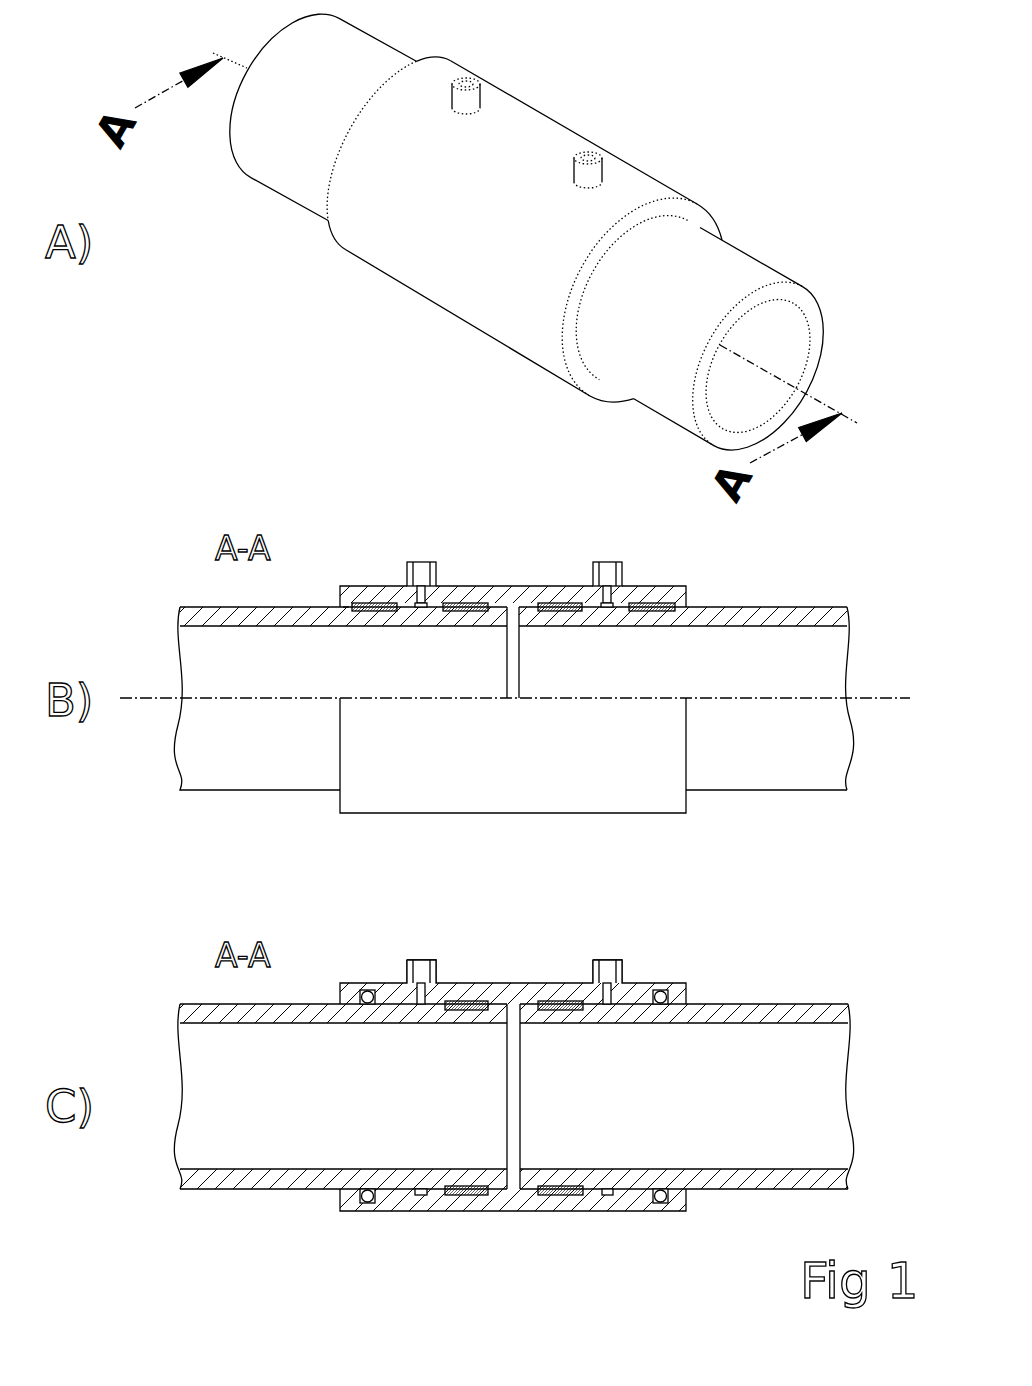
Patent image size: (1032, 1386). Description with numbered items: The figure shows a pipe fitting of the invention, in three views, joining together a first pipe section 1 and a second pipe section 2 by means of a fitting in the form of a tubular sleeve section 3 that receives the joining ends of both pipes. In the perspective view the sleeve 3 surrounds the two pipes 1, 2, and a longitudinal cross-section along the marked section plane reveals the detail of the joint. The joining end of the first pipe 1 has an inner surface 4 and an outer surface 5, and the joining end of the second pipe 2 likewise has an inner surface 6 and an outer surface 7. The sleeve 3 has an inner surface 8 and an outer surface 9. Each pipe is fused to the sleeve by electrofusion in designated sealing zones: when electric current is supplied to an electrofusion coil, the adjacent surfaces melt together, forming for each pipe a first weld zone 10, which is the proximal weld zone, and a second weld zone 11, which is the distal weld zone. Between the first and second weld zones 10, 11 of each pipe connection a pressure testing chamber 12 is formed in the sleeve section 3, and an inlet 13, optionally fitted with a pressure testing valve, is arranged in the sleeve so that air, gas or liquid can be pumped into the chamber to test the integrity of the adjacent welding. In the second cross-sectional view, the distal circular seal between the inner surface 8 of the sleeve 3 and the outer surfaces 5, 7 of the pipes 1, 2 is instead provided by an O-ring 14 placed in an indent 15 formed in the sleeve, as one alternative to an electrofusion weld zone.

The first pipe section 1 is at (341, 44).
The second pipe section 2 is at (722, 242).
The fitting sleeve 3 is at (517, 117).
The inner surface of first pipe 4 is at (186, 625).
The outer surface of first pipe 5 is at (186, 606).
The inner surface of second pipe 6 is at (832, 628).
The outer surface of second pipe 7 is at (832, 606).
The inner surface of sleeve 8 is at (346, 610).
The outer surface of sleeve 9 is at (665, 589).
The first weld zone 10 is at (463, 603).
The second weld zone 11 is at (379, 603).
The pressure testing chamber 12 is at (421, 607).
The inlet 13 is at (426, 568).
The O-ring 14 is at (668, 997).
The indent 15 is at (662, 993).